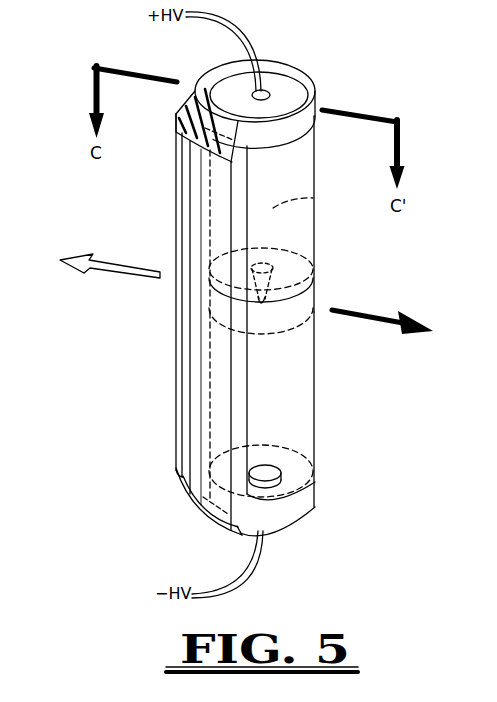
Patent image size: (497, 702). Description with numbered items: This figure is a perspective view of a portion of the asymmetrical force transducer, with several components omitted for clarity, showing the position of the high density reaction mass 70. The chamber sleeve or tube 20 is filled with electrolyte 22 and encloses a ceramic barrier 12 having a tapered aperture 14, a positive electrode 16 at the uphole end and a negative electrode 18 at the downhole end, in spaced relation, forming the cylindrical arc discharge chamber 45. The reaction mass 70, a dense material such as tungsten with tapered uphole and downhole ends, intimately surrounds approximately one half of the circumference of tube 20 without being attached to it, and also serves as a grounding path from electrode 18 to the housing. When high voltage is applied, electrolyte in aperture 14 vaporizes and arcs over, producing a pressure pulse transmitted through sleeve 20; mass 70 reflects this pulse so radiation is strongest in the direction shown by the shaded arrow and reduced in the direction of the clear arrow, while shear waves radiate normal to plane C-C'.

The positive electrode 16 is at (286, 80).
The rubber tube 20 is at (314, 228).
The electrolyte 22 is at (298, 367).
The discharge chamber 45 is at (316, 199).
The aperture 14 is at (316, 254).
The ceramic barrier 12 is at (315, 274).
The negative electrode 18 is at (308, 447).
The high density reaction mass 70 is at (176, 360).